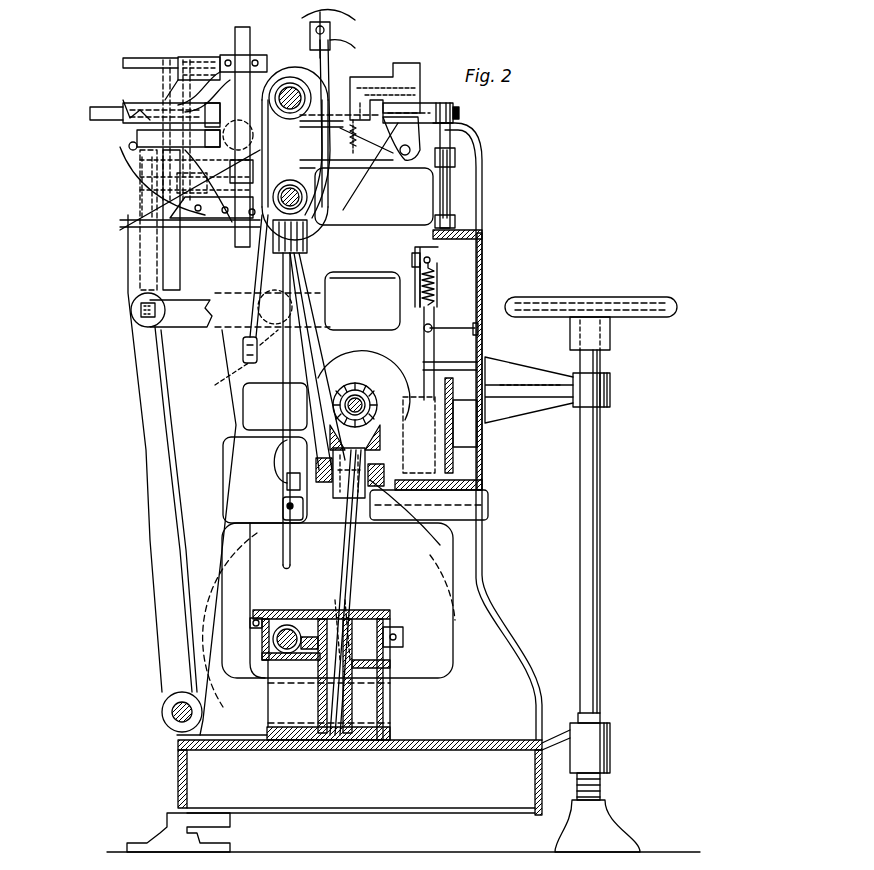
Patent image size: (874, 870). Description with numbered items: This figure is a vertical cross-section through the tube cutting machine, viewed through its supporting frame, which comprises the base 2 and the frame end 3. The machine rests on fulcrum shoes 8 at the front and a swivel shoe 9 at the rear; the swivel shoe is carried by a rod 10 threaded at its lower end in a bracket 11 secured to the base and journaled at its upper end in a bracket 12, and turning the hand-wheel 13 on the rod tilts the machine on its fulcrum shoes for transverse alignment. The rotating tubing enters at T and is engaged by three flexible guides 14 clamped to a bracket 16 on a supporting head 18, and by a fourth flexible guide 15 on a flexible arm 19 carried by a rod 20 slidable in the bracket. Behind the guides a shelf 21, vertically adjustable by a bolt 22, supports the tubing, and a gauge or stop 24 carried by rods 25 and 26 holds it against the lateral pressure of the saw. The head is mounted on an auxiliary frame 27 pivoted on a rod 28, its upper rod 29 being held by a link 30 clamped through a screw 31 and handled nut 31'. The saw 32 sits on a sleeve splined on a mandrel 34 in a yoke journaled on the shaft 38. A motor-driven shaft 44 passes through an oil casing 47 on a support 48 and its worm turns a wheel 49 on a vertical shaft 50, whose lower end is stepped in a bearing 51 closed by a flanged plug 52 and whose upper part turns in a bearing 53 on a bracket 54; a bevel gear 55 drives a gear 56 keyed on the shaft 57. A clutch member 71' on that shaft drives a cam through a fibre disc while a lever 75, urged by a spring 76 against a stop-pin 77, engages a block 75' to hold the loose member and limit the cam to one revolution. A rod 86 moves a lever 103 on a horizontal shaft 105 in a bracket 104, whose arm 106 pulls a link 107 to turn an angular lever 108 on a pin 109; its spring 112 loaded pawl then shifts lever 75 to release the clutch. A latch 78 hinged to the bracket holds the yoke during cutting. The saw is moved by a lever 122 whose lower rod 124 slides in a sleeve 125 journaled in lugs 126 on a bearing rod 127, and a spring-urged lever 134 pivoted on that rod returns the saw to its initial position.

The base 2 is at (360, 777).
The frame end 3 is at (483, 617).
The fulcrum shoes 8 is at (160, 838).
The swivel shoe 9 is at (605, 832).
The rod 10 is at (601, 615).
The bracket 11 is at (611, 750).
The bracket 12 is at (611, 393).
The hand-wheel 13 is at (668, 298).
The flexible guides 14 is at (246, 40).
The flexible guide 15 is at (335, 129).
The bracket 16 is at (196, 55).
The supporting head 18 is at (180, 262).
The flexible arm 19 is at (295, 95).
The rod 20 is at (150, 62).
The shelf 21 is at (200, 165).
The bolt 22 is at (190, 190).
The gauge or stop 24 is at (172, 100).
The rod 25 is at (95, 107).
The rod 26 is at (140, 112).
The auxiliary frame 27 is at (148, 440).
The rod 28 is at (162, 712).
The rod 29 is at (131, 310).
The link 30 is at (178, 331).
The screw 31 is at (236, 293).
The handled nut 31' is at (235, 363).
The saw 32 is at (312, 47).
The mandrel 34 is at (310, 95).
The shaft 38 is at (295, 197).
The shaft 44 is at (272, 640).
The oil casing 47 is at (385, 672).
The support 48 is at (352, 688).
The wheel 49 is at (355, 612).
The vertical shaft 50 is at (340, 600).
The bearing 51 is at (318, 705).
The flanged plug 52 is at (352, 728).
The bearing 53 is at (345, 540).
The bracket 54 is at (416, 520).
The bevel gear 55 is at (375, 445).
The bevel gear 56 is at (361, 396).
The shaft 57 is at (400, 375).
The clutch member 71' is at (450, 354).
The lever 75 is at (484, 381).
The block 75' is at (499, 416).
The spring 76 is at (440, 328).
The stop-pin 77 is at (422, 330).
The latch 78 is at (378, 158).
The rod 86 is at (338, 20).
The lever 103 is at (395, 75).
The bracket 104 is at (455, 92).
The horizontal shaft 105 is at (462, 112).
The arm 106 is at (458, 155).
The link 107 is at (455, 185).
The angular lever 108 is at (458, 222).
The pin 109 is at (411, 260).
The spring 112 is at (440, 288).
The lever 122 is at (280, 448).
The rod 124 is at (284, 478).
The sleeve 125 is at (300, 548).
The lugs 126 is at (282, 508).
The bearing rod 127 is at (490, 510).
The lever 134 is at (362, 290).
The tubing entry point T is at (238, 135).